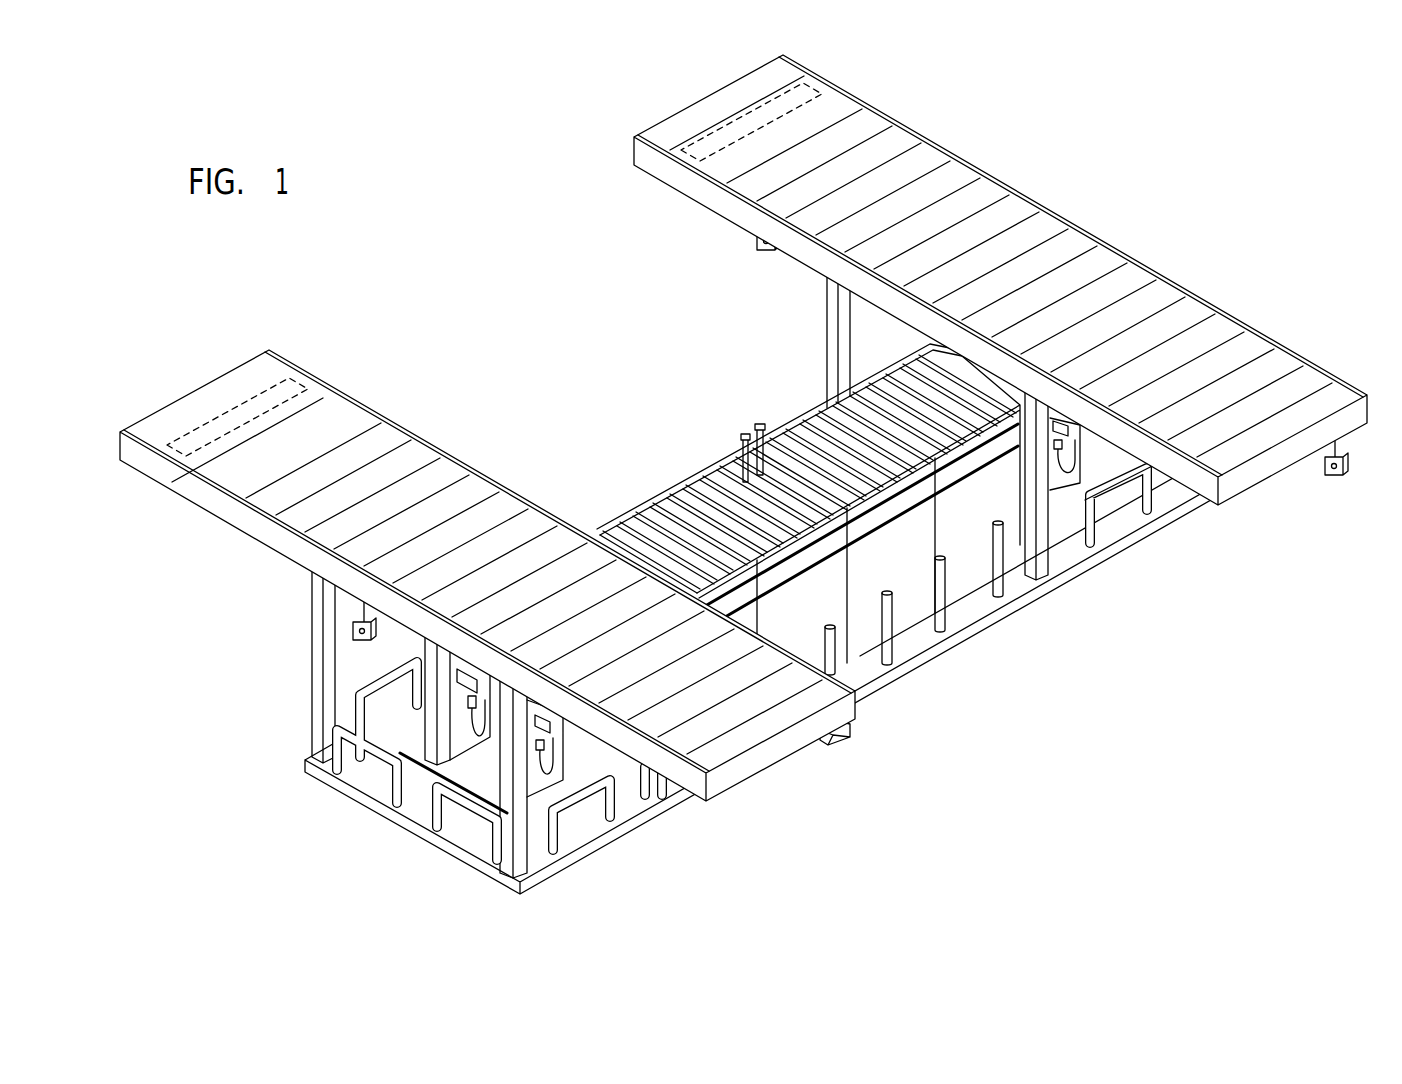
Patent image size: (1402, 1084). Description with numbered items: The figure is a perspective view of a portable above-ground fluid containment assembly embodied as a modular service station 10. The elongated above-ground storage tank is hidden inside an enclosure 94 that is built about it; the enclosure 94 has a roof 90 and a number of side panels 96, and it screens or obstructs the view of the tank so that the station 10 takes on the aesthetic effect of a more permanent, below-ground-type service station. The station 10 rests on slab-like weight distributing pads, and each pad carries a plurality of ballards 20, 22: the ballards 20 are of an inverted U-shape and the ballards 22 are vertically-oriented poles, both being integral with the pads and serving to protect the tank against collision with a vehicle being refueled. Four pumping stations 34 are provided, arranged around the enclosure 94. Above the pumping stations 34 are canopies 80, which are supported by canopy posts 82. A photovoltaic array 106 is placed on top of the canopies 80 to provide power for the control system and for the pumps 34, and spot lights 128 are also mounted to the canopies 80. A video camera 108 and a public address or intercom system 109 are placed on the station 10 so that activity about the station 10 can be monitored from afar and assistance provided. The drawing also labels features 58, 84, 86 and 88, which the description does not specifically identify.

The modular service station 10 is at (598, 338).
The ballard 20 is at (613, 800).
The ballard 22 is at (968, 568).
The pumping station 34 is at (430, 705).
The vent pipe 58 is at (745, 437).
The canopy 80 is at (897, 95).
The canopy post 82 is at (320, 667).
The canopy rim 84 is at (948, 158).
The platform 86 is at (352, 821).
The island partition 88 is at (1103, 467).
The roof 90 is at (700, 492).
The enclosure 94 is at (907, 603).
The side panel 96 is at (944, 607).
The photovoltaic array 106 is at (755, 105).
The video camera 108 is at (352, 630).
The public address system or intercom system 109 is at (766, 246).
The spot light 128 is at (845, 740).